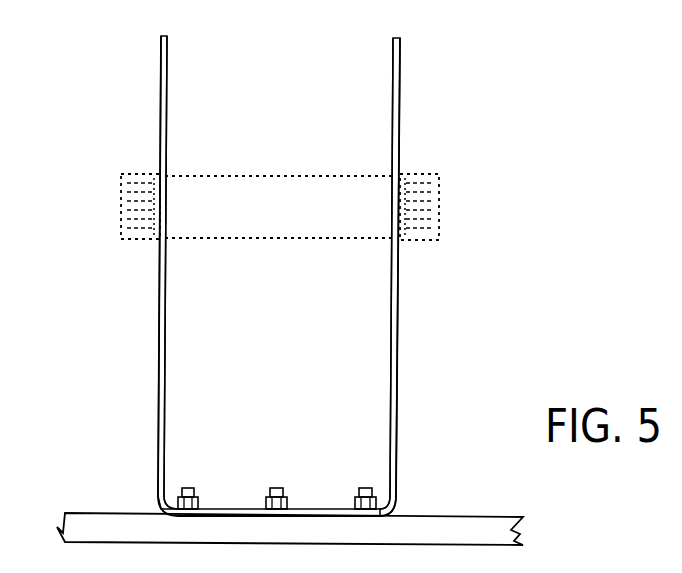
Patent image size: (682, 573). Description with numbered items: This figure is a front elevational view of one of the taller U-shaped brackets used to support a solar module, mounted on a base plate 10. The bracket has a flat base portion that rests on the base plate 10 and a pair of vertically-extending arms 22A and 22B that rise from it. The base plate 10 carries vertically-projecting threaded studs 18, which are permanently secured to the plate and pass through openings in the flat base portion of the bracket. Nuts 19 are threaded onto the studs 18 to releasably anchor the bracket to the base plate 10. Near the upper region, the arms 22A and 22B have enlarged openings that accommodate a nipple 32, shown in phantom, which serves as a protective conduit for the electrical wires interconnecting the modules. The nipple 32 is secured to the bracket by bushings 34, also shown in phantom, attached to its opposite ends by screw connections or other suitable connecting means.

The base plate 10 is at (103, 512).
The threaded studs 18 is at (188, 489).
The nuts 19 is at (262, 494).
The vertically-extending arm 22A is at (398, 290).
The vertically-extending arm 22B is at (159, 328).
The nipple 32 is at (272, 176).
The bushings 34 is at (131, 173).